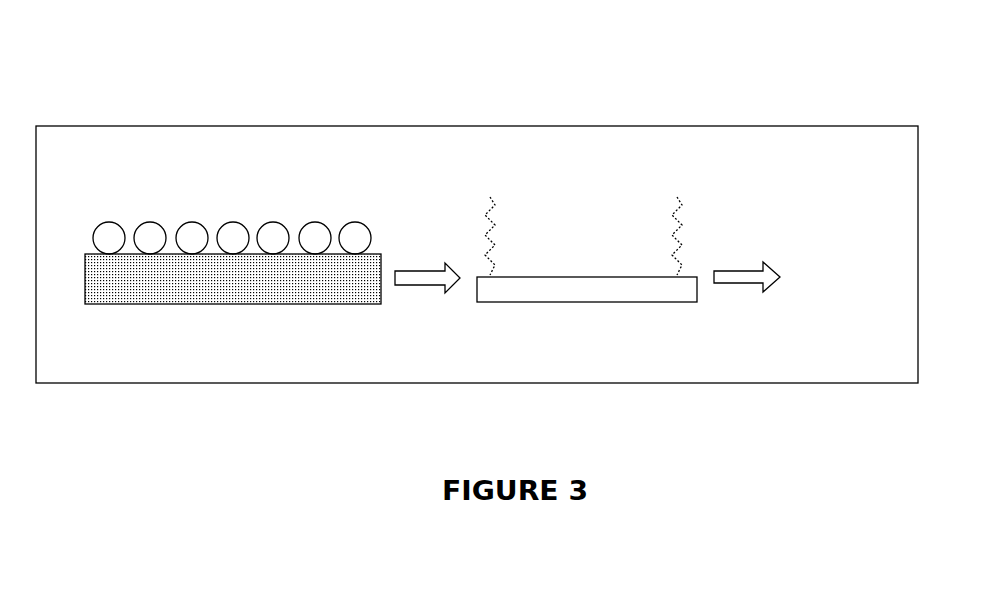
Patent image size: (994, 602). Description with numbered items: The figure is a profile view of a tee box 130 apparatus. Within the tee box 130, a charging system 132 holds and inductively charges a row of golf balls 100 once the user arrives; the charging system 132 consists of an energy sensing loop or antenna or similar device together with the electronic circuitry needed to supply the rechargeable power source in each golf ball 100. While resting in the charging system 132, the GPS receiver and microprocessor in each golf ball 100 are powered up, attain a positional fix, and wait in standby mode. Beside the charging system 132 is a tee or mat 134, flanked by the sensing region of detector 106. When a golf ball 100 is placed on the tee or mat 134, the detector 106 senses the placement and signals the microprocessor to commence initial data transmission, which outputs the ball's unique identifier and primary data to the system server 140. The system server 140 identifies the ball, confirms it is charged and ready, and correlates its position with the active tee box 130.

The tee box 130 is at (477, 199).
The golf ball 100 is at (212, 214).
The charging system 132 is at (239, 303).
The detector 106 is at (501, 222).
The tee or mat 134 is at (587, 313).
The system server 140 is at (802, 280).